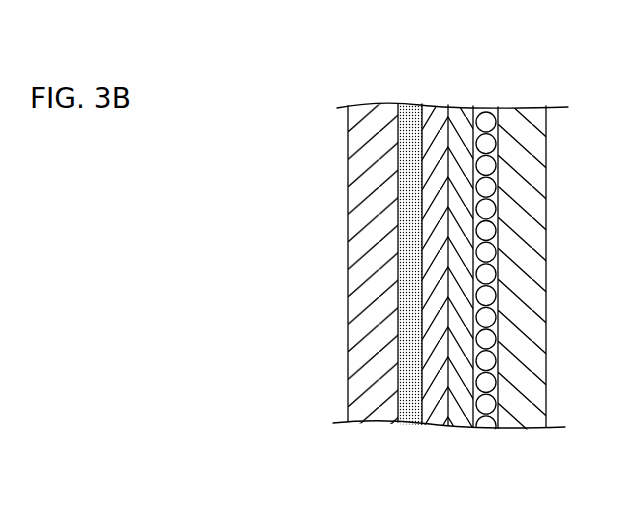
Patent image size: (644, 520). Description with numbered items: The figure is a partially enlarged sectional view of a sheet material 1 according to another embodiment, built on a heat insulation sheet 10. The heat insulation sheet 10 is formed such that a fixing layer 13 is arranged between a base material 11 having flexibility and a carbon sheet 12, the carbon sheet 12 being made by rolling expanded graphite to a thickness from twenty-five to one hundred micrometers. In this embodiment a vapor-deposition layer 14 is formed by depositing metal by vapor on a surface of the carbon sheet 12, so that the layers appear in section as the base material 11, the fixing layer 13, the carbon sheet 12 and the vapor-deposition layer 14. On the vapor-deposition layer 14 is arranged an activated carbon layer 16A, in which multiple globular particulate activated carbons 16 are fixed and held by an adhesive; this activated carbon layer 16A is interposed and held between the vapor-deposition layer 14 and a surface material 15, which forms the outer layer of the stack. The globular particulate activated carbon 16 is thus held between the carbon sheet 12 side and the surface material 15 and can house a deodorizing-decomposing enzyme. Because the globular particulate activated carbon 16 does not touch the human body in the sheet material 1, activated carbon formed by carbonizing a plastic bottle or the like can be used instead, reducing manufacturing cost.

The sheet material 1 is at (313, 373).
The heat insulation sheet 10 is at (345, 437).
The base material 11 is at (358, 172).
The carbon sheet 12 is at (435, 107).
The fixing layer 13 is at (410, 107).
The vapor-deposition layer 14 is at (463, 107).
The surface material 15 is at (536, 192).
The globular particulate activated carbon 16 is at (487, 108).
The activated carbon layer 16A is at (496, 439).